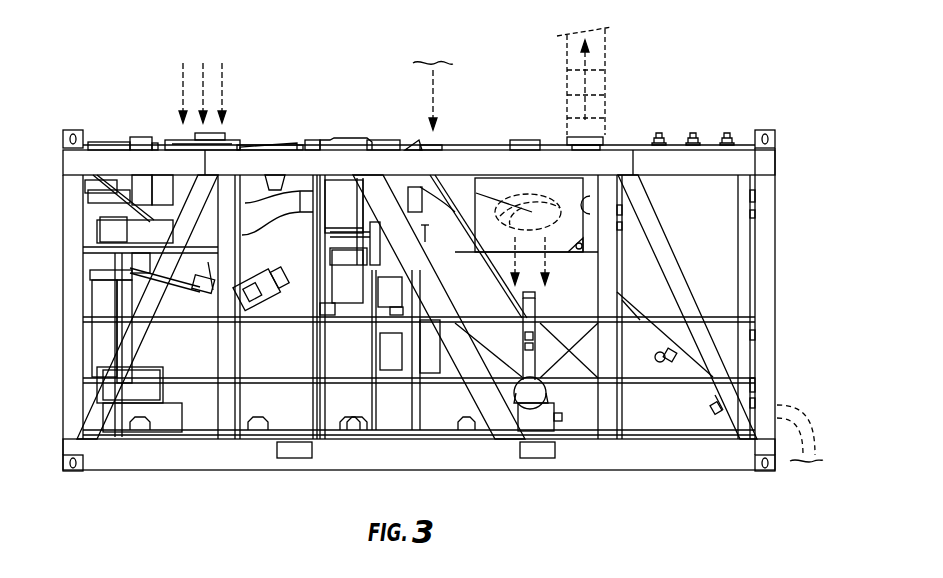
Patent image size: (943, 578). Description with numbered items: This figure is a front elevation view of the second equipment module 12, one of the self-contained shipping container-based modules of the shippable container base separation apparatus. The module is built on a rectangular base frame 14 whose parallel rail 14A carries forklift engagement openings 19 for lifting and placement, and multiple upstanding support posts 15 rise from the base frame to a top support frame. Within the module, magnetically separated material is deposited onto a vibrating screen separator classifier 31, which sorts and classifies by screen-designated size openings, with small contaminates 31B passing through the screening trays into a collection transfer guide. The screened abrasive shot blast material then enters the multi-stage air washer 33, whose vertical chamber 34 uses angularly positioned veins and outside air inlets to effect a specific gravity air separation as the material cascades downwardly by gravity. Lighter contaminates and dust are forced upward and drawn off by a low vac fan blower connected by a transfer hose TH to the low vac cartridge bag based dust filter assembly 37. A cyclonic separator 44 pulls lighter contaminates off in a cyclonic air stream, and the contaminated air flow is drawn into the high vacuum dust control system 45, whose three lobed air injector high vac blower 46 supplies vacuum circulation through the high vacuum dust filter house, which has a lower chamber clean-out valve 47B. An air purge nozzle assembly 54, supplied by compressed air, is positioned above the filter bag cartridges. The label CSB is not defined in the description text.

The second equipment module 12 is at (734, 83).
The rectangular base frame 14 is at (666, 461).
The parallel rail 14A is at (175, 458).
The upstanding support post 15 is at (767, 313).
The forklift engagement opening 19 is at (283, 451).
The vibrating screen separator classifier 31 is at (190, 286).
The small contaminates 31B is at (272, 298).
The multi-stage air washer 33 is at (96, 300).
The vertical chamber 34 is at (97, 348).
The low vac cartridge bag based dust filter assembly 37 is at (392, 143).
The cyclonic separator 44 is at (562, 221).
The high vacuum dust control system 45 is at (427, 188).
The three lobed air injector high vac blower 46 is at (722, 238).
The lower chamber clean-out valve 47B is at (757, 398).
The air purge nozzle assembly 54 is at (732, 126).
The solids inlet flow CSB is at (222, 76).
The transfer hose TH is at (287, 140).